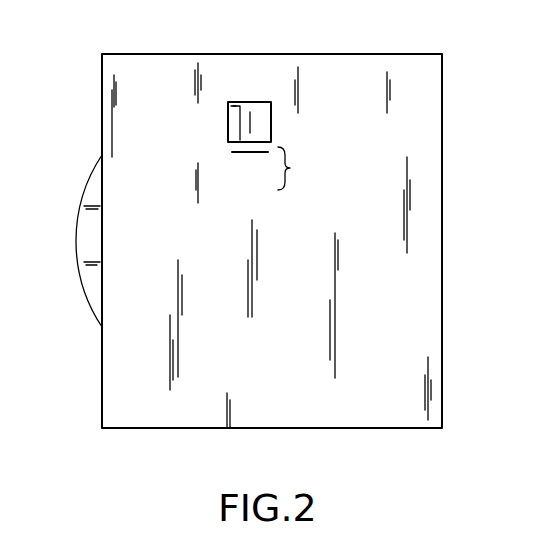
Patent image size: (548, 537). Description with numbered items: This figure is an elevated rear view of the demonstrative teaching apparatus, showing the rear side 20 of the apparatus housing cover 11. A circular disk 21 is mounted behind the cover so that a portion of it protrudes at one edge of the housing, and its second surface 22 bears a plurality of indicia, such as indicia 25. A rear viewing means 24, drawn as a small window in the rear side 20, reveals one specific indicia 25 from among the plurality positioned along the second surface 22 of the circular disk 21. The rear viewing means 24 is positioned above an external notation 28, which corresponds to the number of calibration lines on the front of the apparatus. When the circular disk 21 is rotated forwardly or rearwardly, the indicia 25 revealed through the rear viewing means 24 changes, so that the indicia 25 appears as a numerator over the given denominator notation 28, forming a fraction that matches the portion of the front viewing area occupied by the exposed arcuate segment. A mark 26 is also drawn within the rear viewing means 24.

The apparatus housing cover 11 is at (167, 53).
The rear side 20 is at (407, 78).
The circular disk 21 is at (78, 302).
The second surface 22 is at (86, 230).
The rear viewing means 24 is at (263, 101).
The indicia 25 is at (228, 124).
The inner mark 26 is at (262, 120).
The external notation 28 is at (290, 168).